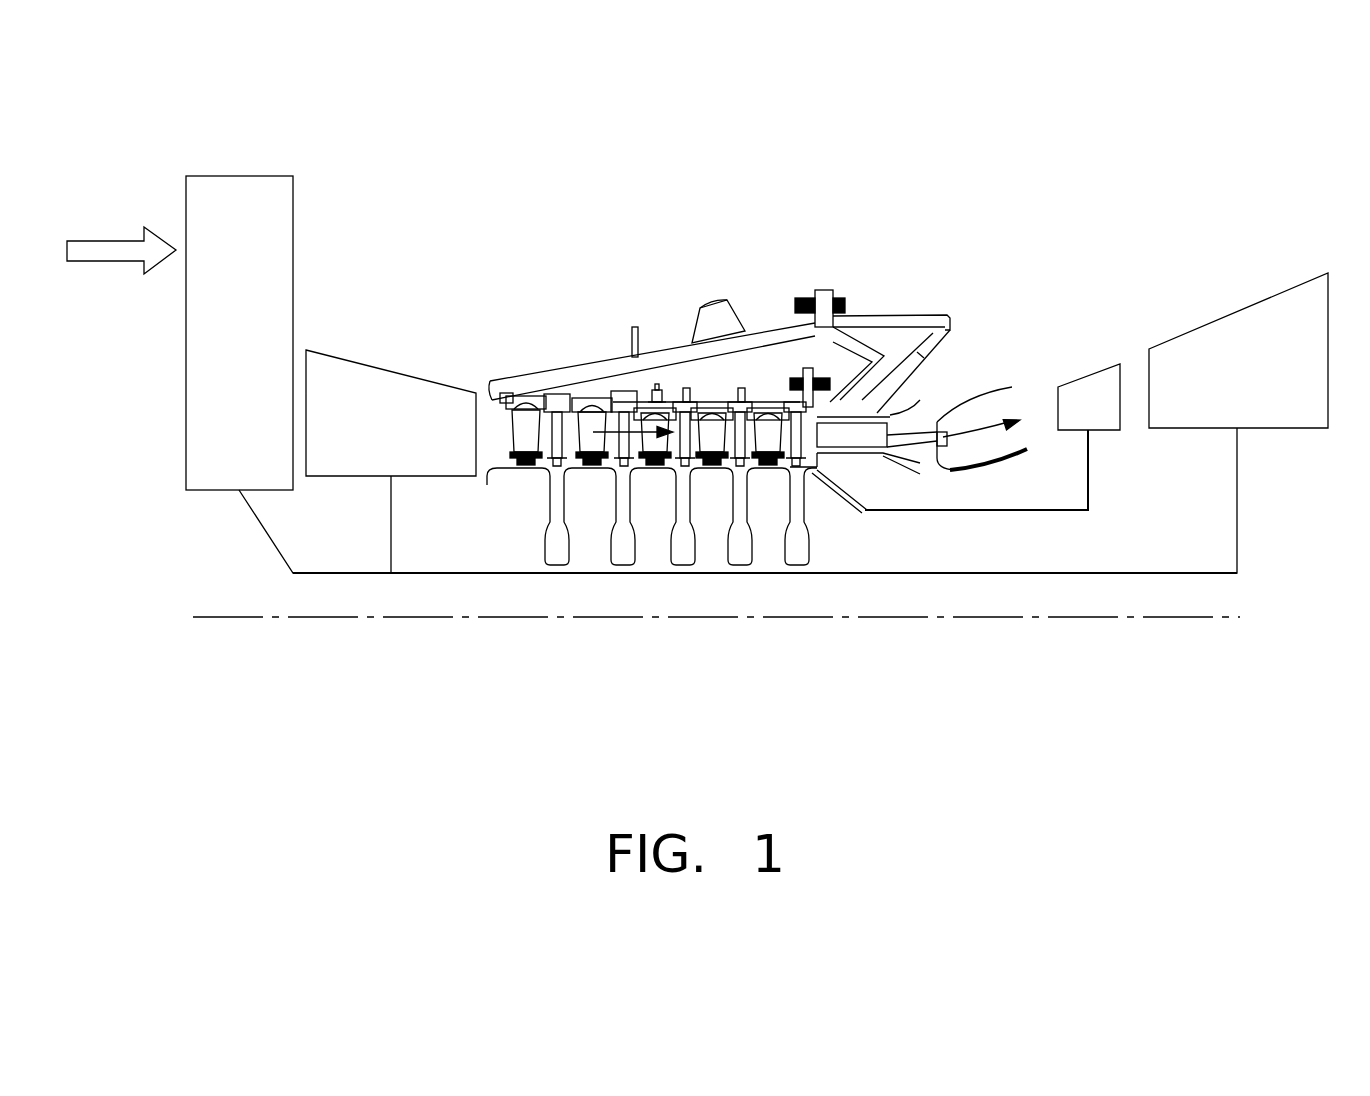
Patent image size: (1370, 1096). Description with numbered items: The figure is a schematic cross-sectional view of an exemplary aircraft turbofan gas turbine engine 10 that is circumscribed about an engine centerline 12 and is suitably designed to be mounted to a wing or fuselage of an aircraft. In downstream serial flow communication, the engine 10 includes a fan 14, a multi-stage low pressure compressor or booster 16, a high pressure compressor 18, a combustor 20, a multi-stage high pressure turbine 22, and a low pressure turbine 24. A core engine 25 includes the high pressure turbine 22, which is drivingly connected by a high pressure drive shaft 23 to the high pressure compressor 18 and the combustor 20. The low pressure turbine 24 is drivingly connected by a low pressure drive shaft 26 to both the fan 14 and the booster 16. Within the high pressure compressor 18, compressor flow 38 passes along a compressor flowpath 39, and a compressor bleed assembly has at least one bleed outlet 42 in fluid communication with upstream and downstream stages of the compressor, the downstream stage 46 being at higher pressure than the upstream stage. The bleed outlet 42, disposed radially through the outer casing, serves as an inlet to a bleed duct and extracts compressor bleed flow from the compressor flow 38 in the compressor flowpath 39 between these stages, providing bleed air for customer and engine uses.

The gas turbine engine 10 is at (1072, 105).
The engine centerline 12 is at (880, 617).
The fan 14 is at (238, 176).
The booster 16 is at (369, 361).
The high pressure compressor 18 is at (652, 286).
The combustor 20 is at (1002, 387).
The high pressure turbine 22 is at (1075, 387).
The high pressure drive shaft 23 is at (923, 512).
The low pressure turbine 24 is at (1225, 396).
The core engine 25 is at (876, 232).
The low pressure drive shaft 26 is at (565, 574).
The compressor flow 38 is at (632, 470).
The compressor flowpath 39 is at (606, 427).
The bleed outlet 42 is at (742, 320).
The downstream stage 46 is at (667, 395).